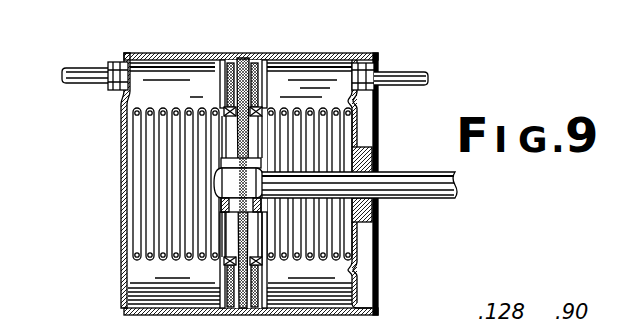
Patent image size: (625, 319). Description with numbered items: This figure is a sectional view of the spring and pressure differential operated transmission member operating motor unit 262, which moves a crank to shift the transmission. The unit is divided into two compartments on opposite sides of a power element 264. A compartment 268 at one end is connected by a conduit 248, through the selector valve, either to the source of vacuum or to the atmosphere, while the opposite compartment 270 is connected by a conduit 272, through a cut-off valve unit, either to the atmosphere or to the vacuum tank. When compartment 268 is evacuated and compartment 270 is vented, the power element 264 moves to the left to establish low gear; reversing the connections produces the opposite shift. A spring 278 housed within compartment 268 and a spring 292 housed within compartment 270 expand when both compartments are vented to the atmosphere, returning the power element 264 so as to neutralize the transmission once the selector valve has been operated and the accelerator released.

The motor unit 262 is at (128, 53).
The conduit 248 is at (82, 82).
The power element 264 is at (248, 88).
The compartment 270 is at (327, 77).
The conduit 272 is at (408, 77).
The spring 278 is at (137, 208).
The compartment 268 is at (138, 285).
The spring 292 is at (342, 242).